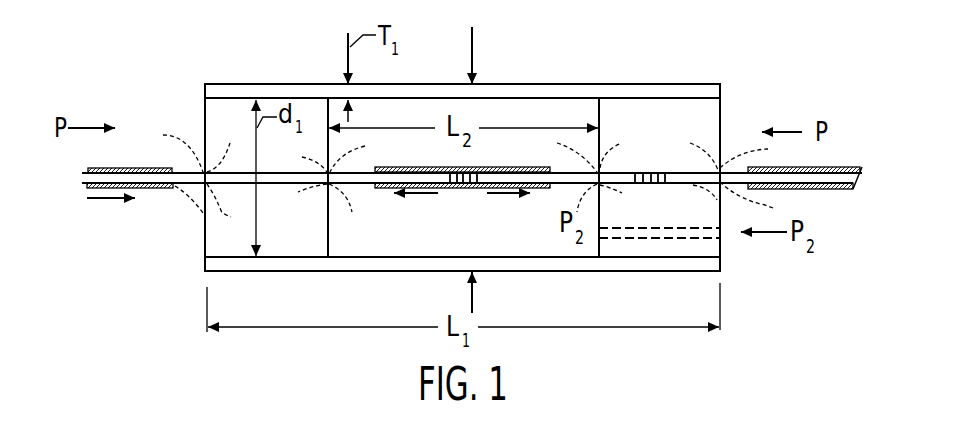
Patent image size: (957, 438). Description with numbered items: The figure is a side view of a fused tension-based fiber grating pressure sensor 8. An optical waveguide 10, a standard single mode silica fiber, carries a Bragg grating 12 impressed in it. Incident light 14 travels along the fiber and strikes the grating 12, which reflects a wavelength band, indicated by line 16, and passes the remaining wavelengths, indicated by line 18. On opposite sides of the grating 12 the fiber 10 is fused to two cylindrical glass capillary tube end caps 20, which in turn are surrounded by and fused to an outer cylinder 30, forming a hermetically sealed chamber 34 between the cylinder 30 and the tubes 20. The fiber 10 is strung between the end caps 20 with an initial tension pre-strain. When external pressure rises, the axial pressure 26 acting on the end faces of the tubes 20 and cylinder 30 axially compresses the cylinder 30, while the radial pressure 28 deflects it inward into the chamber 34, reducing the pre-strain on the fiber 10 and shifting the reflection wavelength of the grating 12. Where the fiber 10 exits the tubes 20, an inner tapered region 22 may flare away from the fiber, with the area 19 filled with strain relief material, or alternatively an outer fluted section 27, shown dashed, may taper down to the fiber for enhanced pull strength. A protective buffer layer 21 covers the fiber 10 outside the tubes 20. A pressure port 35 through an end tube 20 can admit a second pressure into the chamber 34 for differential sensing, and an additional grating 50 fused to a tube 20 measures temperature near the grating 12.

The fused tension-based fiber grating pressure sensor 8 is at (240, 63).
The optical waveguide 10 is at (113, 180).
The Bragg grating 12 is at (447, 170).
The light 14 is at (110, 200).
The line indicating reflected light 16 is at (428, 197).
The line indicating transmitted light 18 is at (497, 197).
The area between tube and fiber 19 is at (500, 183).
The capillary tube end caps 20 is at (210, 115).
The protective buffer layer 21 is at (143, 190).
The inner tapered region 22 is at (462, 164).
The axial pressure 26 is at (78, 128).
The outer tapered section 27 is at (469, 171).
The radial pressure 28 is at (475, 43).
The outer cylinder 30 is at (603, 88).
The chamber 34 is at (478, 244).
The pressure port 35 is at (683, 228).
The additional grating 50 is at (650, 173).